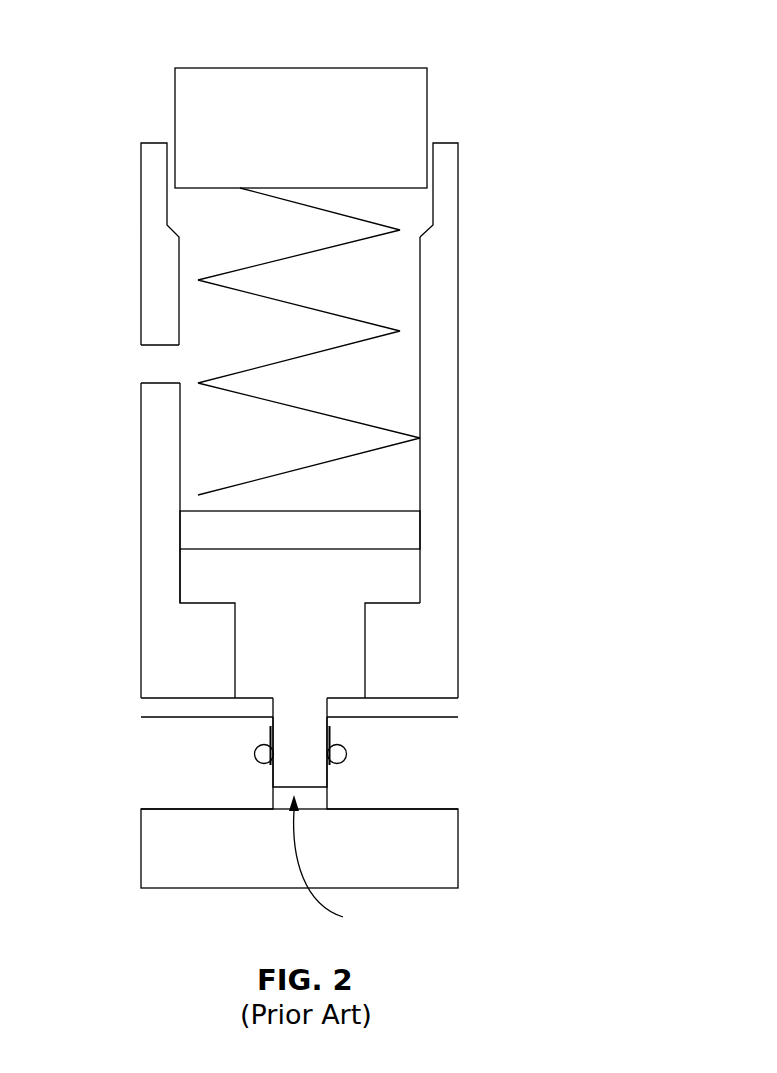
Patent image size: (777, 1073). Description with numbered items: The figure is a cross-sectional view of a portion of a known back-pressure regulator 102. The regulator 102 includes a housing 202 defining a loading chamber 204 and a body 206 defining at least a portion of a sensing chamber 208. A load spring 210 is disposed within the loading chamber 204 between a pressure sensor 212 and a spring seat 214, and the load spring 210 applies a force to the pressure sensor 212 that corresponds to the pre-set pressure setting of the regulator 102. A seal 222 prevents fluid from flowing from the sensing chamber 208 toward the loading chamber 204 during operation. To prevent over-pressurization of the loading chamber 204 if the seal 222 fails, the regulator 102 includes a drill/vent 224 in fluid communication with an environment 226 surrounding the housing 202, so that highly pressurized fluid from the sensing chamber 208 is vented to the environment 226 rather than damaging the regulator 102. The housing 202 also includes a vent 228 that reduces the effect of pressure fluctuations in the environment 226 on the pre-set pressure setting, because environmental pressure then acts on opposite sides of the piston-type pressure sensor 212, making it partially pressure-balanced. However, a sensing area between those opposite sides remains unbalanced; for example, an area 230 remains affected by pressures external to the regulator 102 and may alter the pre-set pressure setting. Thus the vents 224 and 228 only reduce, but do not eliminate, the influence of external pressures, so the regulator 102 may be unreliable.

The back-pressure regulator 102 is at (523, 82).
The housing 202 is at (453, 467).
The loading chamber 204 is at (403, 369).
The body 206 is at (433, 758).
The sensing chamber 208 is at (237, 862).
The load spring 210 is at (342, 315).
The pressure sensor 212 is at (401, 533).
The spring seat 214 is at (408, 128).
The seal 222 is at (252, 755).
The drill/vent 224 is at (153, 383).
The environment 226 is at (77, 520).
The vent 228 is at (150, 715).
The area 230 is at (345, 864).